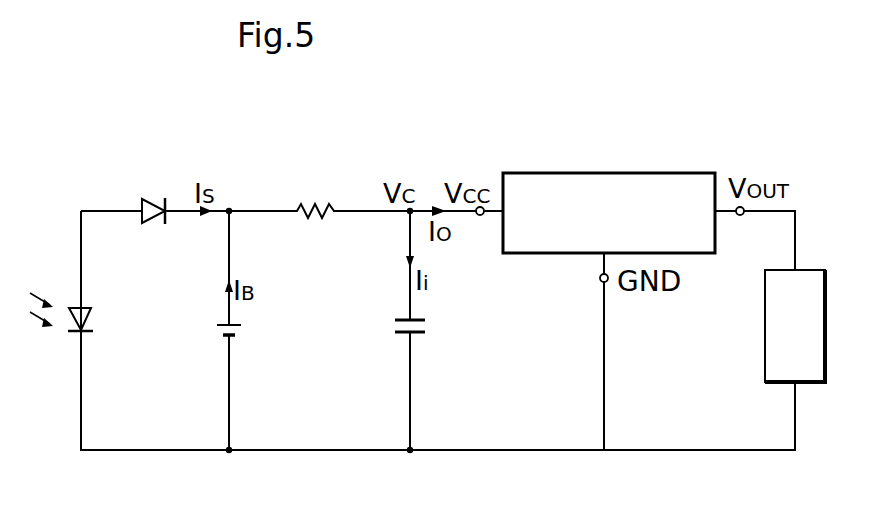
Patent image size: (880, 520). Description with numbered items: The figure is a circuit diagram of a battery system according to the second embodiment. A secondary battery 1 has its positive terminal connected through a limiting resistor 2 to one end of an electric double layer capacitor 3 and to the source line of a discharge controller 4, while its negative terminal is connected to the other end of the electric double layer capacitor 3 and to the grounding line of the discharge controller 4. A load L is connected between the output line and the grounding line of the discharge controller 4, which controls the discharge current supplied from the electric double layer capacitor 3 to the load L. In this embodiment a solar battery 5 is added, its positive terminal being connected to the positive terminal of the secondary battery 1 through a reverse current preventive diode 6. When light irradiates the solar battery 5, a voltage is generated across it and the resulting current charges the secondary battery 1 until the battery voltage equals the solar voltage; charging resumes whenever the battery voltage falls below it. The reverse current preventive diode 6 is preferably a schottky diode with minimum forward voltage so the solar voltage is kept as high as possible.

The secondary battery 1 is at (241, 321).
The limiting resistor 2 is at (336, 202).
The electric double layer capacitor 3 is at (420, 318).
The discharge controller 4 is at (597, 172).
The solar battery 5 is at (88, 306).
The reverse current preventive diode 6 is at (158, 200).
The load L is at (822, 268).